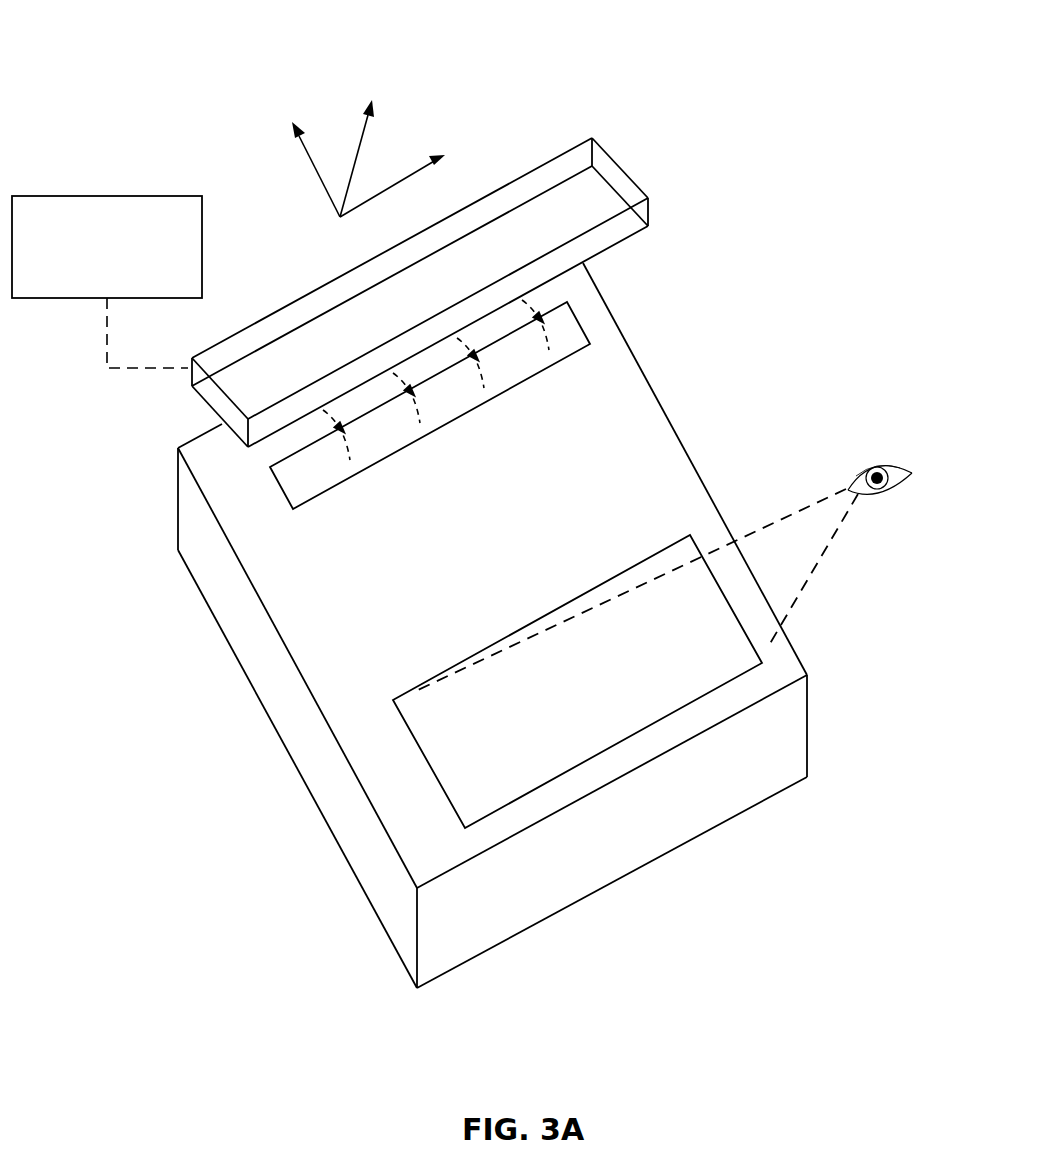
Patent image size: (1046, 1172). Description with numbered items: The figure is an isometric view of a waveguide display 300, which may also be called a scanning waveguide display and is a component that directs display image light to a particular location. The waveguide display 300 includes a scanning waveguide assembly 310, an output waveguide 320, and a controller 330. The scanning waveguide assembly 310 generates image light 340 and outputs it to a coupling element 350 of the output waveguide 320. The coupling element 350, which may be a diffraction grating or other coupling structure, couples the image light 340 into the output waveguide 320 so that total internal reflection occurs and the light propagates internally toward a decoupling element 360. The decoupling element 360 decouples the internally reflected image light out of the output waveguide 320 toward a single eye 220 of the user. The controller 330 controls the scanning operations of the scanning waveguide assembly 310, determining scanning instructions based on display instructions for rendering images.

The waveguide display 300 is at (57, 36).
The scanning waveguide assembly 310 is at (216, 403).
The output waveguide 320 is at (337, 743).
The controller 330 is at (88, 271).
The image light 340 is at (550, 327).
The coupling element 350 is at (282, 490).
The decoupling element 360 is at (450, 813).
The eye 220 is at (883, 526).